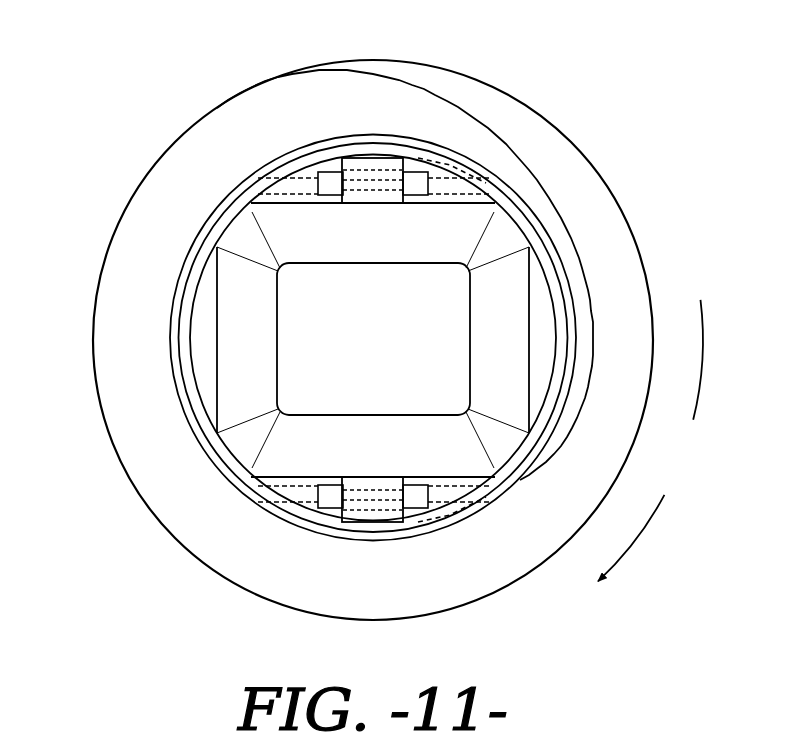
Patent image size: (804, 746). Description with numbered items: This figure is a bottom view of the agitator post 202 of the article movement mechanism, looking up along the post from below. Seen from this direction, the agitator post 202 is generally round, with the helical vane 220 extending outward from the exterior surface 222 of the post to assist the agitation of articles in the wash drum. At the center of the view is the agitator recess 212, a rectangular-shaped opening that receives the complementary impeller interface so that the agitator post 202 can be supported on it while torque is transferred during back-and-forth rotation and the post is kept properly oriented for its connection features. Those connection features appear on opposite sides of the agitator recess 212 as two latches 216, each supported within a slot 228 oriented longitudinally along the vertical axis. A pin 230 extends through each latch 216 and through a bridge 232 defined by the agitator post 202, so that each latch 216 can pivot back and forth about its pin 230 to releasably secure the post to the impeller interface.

The agitator post 202 is at (664, 173).
The agitator recess 212 is at (333, 343).
The latch 216 is at (370, 172).
The helical vane 220 is at (175, 180).
The exterior surface 222 is at (183, 260).
The slot 228 is at (380, 158).
The pin 230 is at (440, 178).
The bridge 232 is at (320, 190).